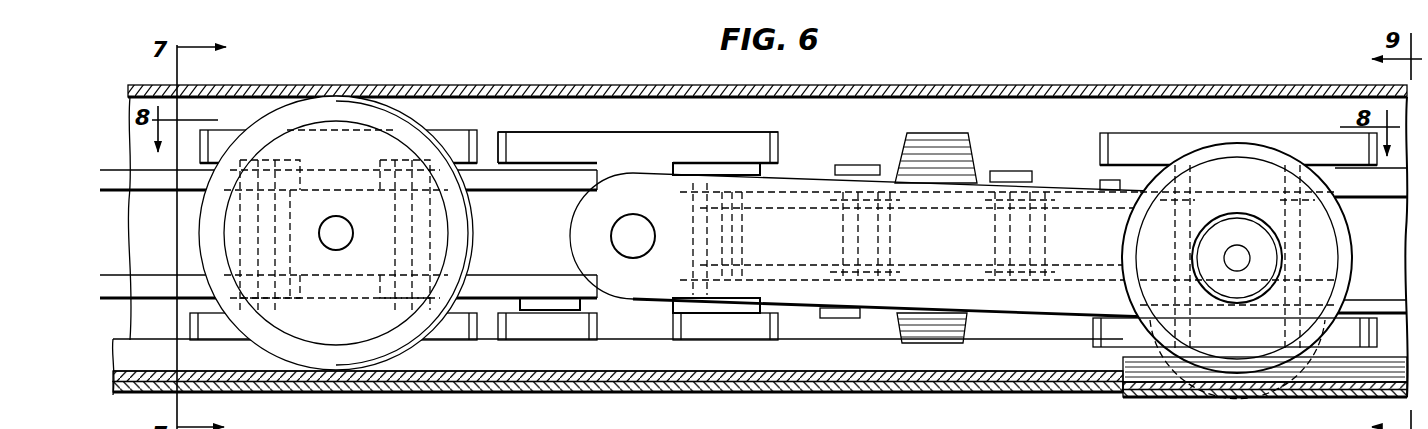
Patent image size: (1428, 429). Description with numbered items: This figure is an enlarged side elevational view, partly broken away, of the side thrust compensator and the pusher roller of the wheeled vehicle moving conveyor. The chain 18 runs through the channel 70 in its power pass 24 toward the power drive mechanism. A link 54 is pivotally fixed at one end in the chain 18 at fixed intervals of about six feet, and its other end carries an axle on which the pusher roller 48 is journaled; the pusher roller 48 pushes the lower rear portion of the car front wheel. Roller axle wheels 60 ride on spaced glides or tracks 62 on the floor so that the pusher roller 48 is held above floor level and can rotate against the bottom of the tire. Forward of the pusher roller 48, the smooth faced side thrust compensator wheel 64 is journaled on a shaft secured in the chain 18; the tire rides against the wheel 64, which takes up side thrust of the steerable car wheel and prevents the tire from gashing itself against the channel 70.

The chain 18 is at (587, 183).
The power pass 24 is at (617, 128).
The pusher roller 48 is at (1142, 325).
The link 54 is at (1090, 190).
The roller axle wheel 60 is at (1160, 323).
The glide or track 62 is at (1148, 367).
The side thrust compensator wheel 64 is at (358, 112).
The channel 70 is at (603, 103).